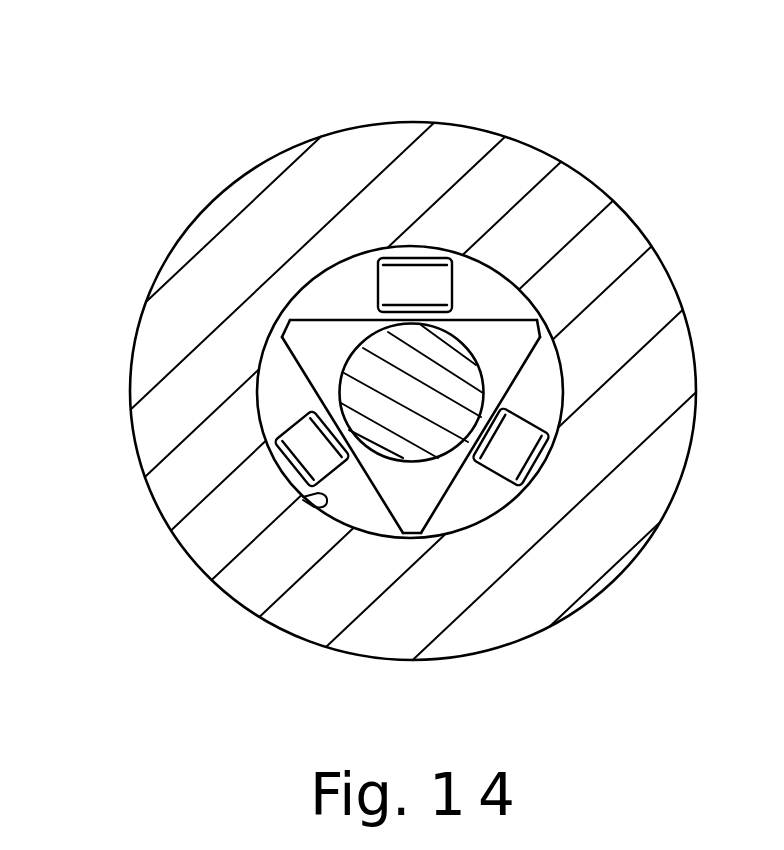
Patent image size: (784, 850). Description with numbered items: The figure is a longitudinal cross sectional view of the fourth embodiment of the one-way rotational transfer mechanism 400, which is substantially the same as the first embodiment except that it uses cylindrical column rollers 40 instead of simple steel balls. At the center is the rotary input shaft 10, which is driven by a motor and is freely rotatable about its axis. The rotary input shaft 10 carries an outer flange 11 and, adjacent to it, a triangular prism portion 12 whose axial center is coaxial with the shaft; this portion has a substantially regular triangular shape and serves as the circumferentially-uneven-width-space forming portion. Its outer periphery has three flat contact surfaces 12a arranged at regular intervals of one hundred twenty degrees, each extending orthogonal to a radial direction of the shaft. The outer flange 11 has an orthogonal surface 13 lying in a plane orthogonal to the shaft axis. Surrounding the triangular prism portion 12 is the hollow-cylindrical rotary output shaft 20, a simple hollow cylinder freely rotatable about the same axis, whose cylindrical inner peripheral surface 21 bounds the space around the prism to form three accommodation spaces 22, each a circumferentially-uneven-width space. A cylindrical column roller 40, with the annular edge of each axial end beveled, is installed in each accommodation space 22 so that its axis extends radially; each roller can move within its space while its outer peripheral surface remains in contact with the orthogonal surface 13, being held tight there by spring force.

The one-way rotational transfer mechanism 400 is at (581, 120).
The rotary input shaft 10 is at (346, 387).
The outer flange 11 is at (446, 192).
The triangular prism portion 12 is at (324, 395).
The contact surface 12a is at (543, 333).
The orthogonal surface 13 is at (297, 266).
The hollow-cylindrical rotary output shaft 20 is at (237, 578).
The inner peripheral surface 21 is at (302, 497).
The accommodation space 22 is at (498, 283).
The cylindrical column roller 40 is at (412, 265).